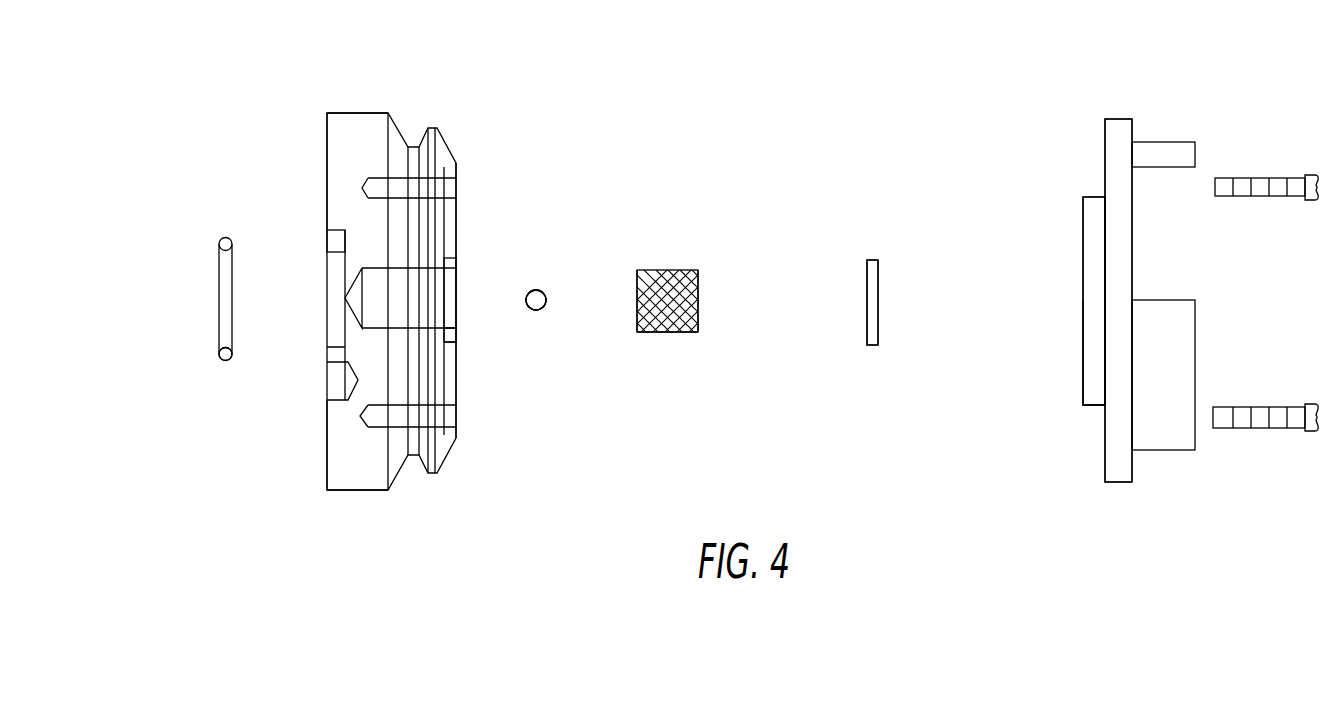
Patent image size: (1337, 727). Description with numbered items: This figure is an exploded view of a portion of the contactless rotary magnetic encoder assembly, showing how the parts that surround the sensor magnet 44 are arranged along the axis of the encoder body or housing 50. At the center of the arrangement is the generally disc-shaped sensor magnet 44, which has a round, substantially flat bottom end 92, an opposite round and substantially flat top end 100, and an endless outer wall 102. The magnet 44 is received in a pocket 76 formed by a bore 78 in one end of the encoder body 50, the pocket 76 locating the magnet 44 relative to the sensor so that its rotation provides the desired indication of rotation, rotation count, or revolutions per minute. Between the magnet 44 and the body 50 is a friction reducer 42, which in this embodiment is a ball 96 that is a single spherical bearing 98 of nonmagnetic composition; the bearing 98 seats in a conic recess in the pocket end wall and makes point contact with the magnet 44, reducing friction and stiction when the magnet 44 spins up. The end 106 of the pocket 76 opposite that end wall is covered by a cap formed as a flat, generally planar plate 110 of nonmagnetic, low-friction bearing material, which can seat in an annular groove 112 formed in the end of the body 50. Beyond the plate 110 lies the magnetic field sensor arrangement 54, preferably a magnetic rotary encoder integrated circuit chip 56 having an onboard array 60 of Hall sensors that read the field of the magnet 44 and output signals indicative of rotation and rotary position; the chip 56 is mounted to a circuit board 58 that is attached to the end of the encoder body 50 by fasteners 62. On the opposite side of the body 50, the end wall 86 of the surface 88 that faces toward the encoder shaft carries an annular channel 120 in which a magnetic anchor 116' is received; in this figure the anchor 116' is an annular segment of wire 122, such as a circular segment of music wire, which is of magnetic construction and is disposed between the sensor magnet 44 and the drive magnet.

The friction reducer 42 is at (559, 272).
The sensor magnet 44 is at (683, 248).
The encoder body 50 is at (355, 518).
The magnetic field sensor arrangement 54 is at (1062, 368).
The magnetic rotary encoder integrated circuit chip 56 is at (1083, 243).
The circuit board 58 is at (1118, 119).
The array of Hall sensors 60 is at (1083, 302).
The fasteners 62 is at (1265, 178).
The pocket 76 is at (472, 314).
The bore 78 is at (470, 272).
The end wall 86 is at (327, 432).
The end surface of encoder body 88 is at (327, 135).
The bottom end of sensor magnet 92 is at (637, 300).
The ball 96 is at (534, 290).
The spherical bearing 98 is at (542, 308).
The top end of sensor magnet 100 is at (698, 300).
The outer wall of sensor magnet 102 is at (675, 332).
The end of pocket 106 is at (899, 239).
The plate 110 is at (867, 317).
The annular groove 112 is at (458, 325).
The magnetic anchor 116' is at (173, 251).
The annular channel 120 is at (327, 240).
The annular segment of wire 122 is at (221, 359).